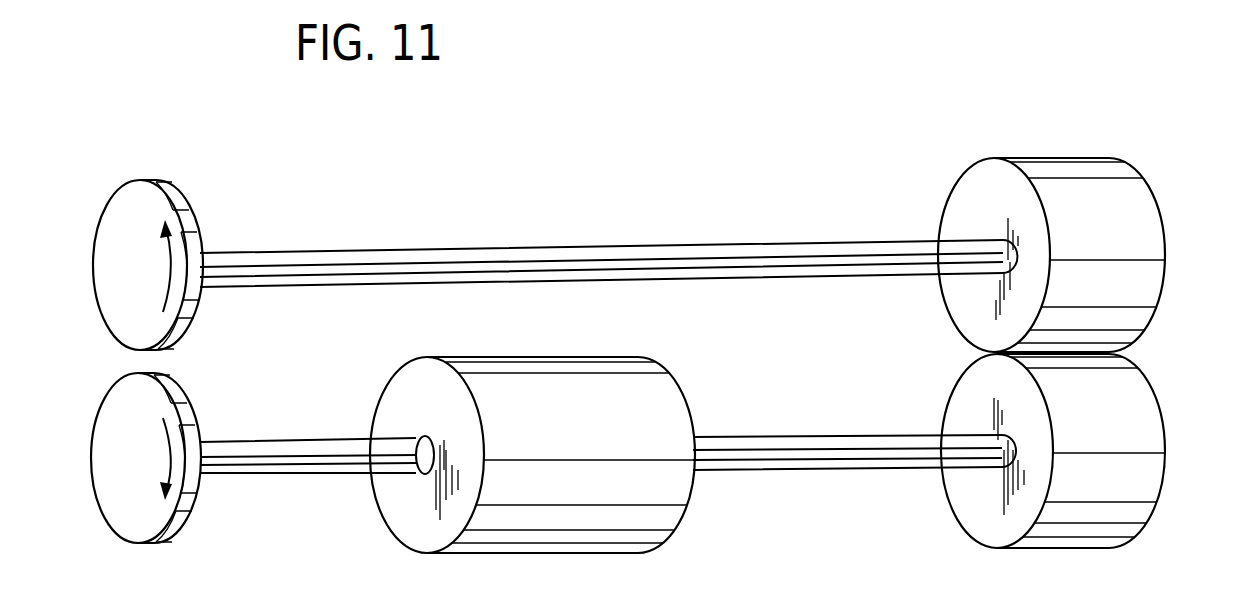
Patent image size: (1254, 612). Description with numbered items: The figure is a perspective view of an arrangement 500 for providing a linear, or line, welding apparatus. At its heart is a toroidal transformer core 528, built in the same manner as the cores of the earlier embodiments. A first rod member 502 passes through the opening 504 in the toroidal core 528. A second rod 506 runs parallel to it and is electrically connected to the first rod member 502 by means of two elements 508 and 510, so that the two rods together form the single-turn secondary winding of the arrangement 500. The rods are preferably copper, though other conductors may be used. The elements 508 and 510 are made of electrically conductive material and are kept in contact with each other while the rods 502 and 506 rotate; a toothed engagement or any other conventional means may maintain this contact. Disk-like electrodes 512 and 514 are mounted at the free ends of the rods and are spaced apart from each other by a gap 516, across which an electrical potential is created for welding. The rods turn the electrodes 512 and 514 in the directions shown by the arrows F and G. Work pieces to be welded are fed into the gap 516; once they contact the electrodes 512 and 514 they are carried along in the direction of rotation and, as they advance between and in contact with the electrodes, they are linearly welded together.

The arrangement 500 is at (690, 204).
The first rod member 502 is at (772, 441).
The opening 504 is at (415, 437).
The rod 506 is at (548, 252).
The element 508 is at (1122, 190).
The element 510 is at (1137, 397).
The disk-like electrode 512 is at (130, 505).
The disk-like electrode 514 is at (132, 200).
The gap 516 is at (135, 358).
The transformer core 528 is at (642, 523).